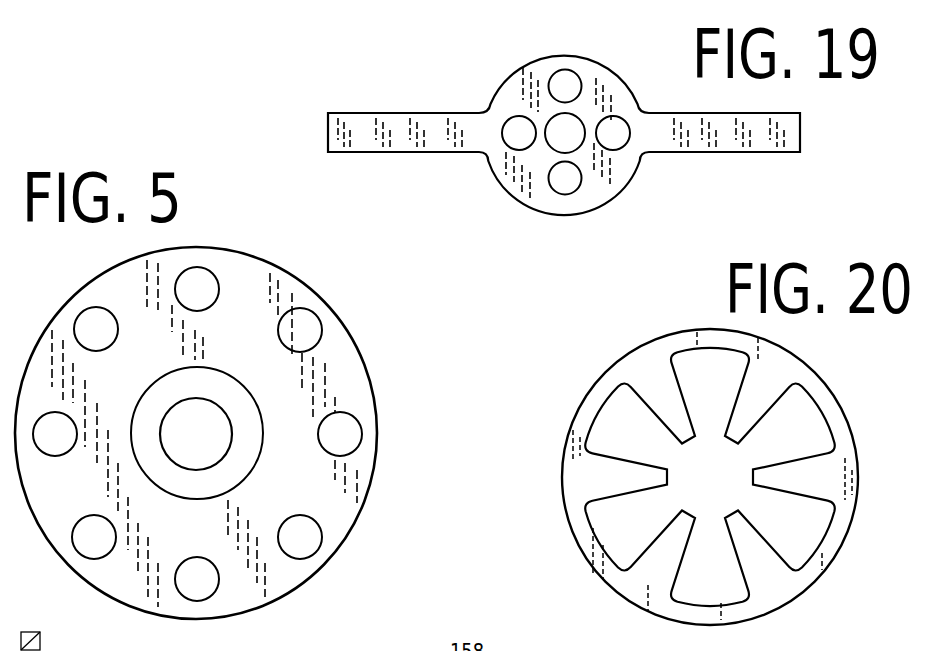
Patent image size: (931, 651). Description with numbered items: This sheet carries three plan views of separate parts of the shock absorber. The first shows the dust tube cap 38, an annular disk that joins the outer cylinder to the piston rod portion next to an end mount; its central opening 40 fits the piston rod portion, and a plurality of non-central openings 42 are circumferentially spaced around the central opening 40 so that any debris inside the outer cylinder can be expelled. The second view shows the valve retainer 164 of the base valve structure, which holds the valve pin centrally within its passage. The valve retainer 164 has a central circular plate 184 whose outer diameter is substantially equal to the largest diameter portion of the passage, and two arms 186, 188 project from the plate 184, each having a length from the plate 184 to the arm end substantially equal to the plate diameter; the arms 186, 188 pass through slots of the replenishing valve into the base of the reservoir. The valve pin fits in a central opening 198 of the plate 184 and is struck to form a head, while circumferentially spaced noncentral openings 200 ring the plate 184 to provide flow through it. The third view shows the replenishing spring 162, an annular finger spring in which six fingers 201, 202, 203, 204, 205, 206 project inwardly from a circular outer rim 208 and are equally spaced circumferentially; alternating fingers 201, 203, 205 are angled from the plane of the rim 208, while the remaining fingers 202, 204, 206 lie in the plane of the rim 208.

In FIG. 5, the cap 38 is at (342, 365).
In FIG. 5, the central opening 40 is at (160, 434).
In FIG. 5, the non-central openings 42 is at (280, 328).
In FIG. 19, the valve retainer 164 is at (560, 51).
In FIG. 19, the circular plate 184 is at (615, 193).
In FIG. 19, the arm 186 is at (420, 127).
In FIG. 19, the arm 188 is at (731, 138).
In FIG. 19, the central opening 198 is at (545, 133).
In FIG. 19, the noncentral openings 200 is at (555, 175).
In FIG. 20, the replenishing spring 162 is at (728, 477).
In FIG. 20, the finger 201 is at (763, 392).
In FIG. 20, the finger 202 is at (780, 477).
In FIG. 20, the finger 203 is at (743, 542).
In FIG. 20, the finger 204 is at (660, 568).
In FIG. 20, the finger 205 is at (622, 480).
In FIG. 20, the finger 206 is at (663, 368).
In FIG. 20, the circular outer rim 208 is at (833, 417).